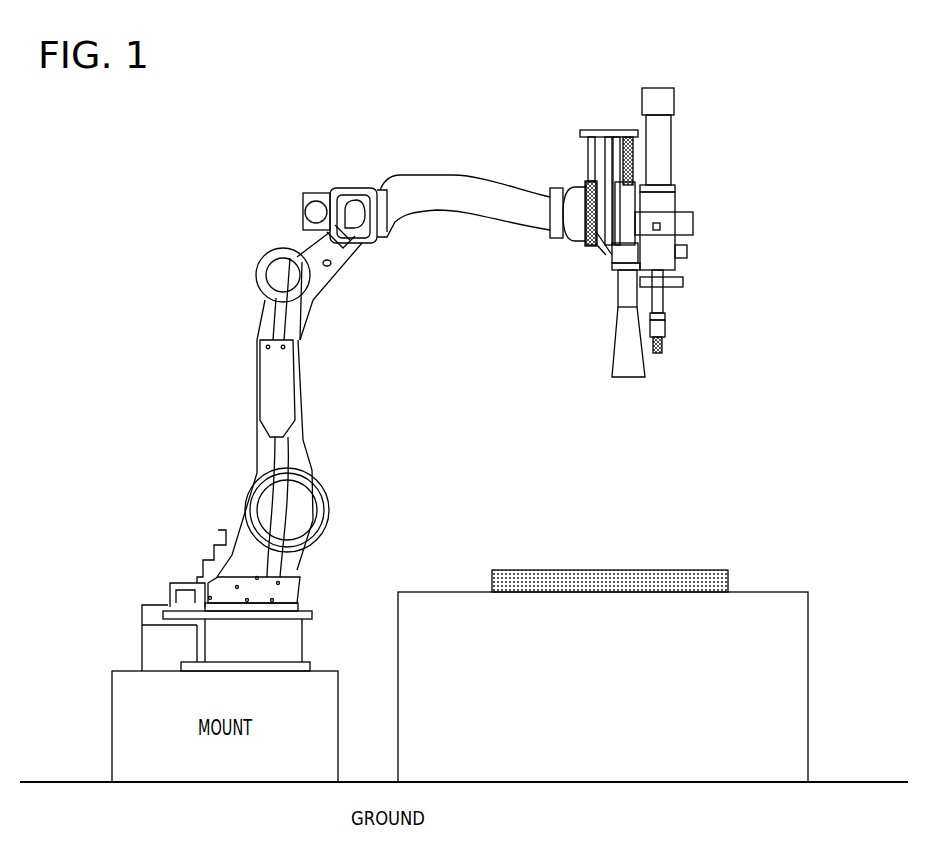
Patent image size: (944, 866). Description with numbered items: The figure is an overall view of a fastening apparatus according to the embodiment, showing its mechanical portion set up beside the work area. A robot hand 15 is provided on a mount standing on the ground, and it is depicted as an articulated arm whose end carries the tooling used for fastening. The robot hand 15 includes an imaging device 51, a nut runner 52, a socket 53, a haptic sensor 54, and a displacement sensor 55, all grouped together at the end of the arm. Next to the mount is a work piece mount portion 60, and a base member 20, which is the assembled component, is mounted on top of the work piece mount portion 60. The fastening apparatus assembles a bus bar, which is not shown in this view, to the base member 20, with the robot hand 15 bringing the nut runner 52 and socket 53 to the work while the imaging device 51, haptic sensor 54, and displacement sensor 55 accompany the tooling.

The robot hand 15 is at (363, 423).
The base member 20 is at (706, 570).
The imaging device 51 is at (615, 283).
The nut runner 52 is at (675, 145).
The socket 53 is at (665, 325).
The haptic sensor 54 is at (590, 181).
The displacement sensor 55 is at (591, 213).
The work piece mount portion 60 is at (808, 643).